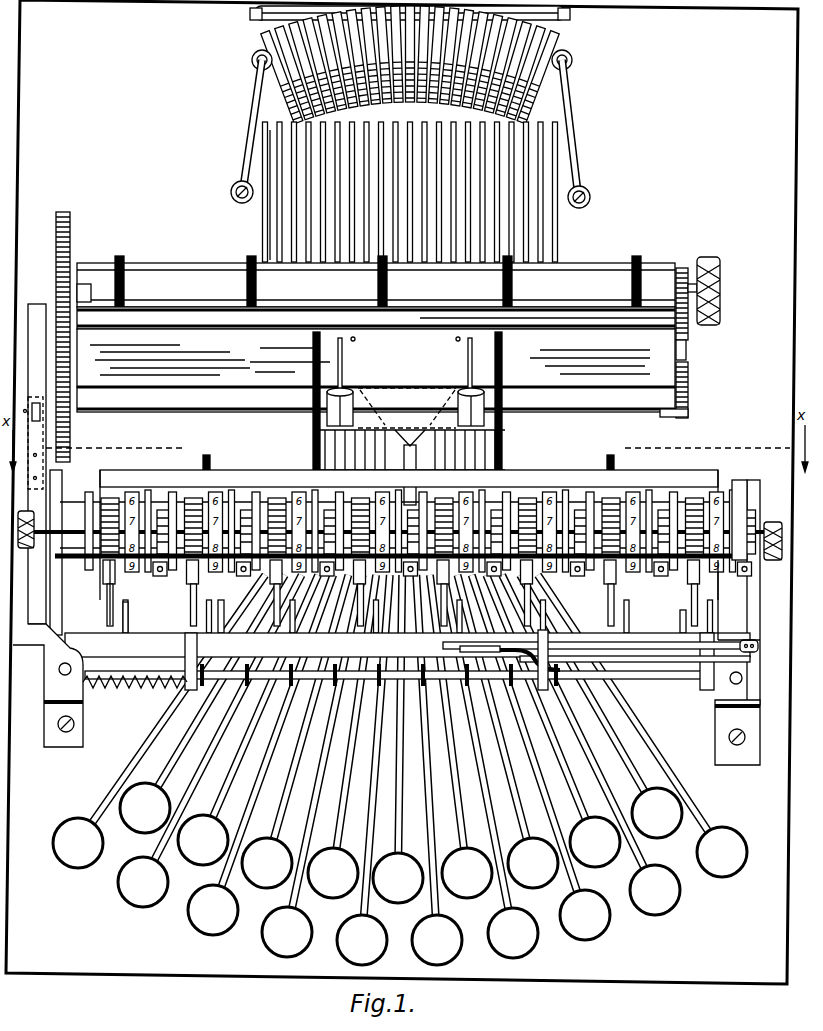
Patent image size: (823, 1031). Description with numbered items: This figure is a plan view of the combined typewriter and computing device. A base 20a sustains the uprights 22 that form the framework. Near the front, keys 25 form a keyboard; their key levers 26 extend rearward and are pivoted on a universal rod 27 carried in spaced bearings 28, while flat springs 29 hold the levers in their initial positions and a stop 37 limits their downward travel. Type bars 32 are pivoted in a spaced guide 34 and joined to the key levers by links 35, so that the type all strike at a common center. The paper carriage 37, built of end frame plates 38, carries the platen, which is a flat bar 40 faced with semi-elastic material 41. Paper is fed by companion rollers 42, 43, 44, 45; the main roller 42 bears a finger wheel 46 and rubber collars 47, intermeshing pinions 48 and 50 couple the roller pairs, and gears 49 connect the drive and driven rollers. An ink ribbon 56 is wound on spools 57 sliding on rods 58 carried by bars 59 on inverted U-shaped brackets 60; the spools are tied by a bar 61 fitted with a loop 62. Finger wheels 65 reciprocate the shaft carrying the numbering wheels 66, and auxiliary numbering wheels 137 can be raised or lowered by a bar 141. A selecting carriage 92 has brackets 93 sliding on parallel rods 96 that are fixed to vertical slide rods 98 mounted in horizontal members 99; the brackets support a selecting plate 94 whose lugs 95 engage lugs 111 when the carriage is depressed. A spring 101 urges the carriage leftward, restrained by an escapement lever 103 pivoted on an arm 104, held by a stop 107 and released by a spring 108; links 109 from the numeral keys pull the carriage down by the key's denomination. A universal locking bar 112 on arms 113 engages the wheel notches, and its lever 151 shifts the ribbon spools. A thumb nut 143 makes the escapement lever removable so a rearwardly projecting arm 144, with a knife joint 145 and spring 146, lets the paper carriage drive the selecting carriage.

The base 20a is at (400, 874).
The uprights 22 is at (160, 508).
The keys 25 is at (232, 905).
The key levers 26 is at (282, 236).
The universal rod 27 is at (255, 13).
The bearings 28 is at (262, 22).
The flat springs 29 is at (290, 172).
The type bars 32 is at (258, 74).
The guide 34 is at (566, 76).
The links 35 is at (520, 208).
The paper carriage 37 is at (686, 348).
The end frame plates 38 is at (72, 300).
The flat bar 40 is at (243, 340).
The semi-elastic material 41 is at (590, 344).
The main roller 42 is at (192, 272).
The companion roller 43 is at (574, 320).
The companion roller 44 is at (652, 392).
The driven roller 45 is at (660, 416).
The finger wheel 46 is at (722, 284).
The collars 47 is at (372, 295).
The intermeshing pinions 48 is at (682, 268).
The gears 49 is at (56, 262).
The intermeshing pinions 50 is at (690, 378).
The ink ribbon 56 is at (412, 392).
The spools 57 is at (354, 402).
The rods 58 is at (344, 350).
The bars 59 is at (407, 394).
The inverted U shaped brackets 60 is at (313, 350).
The bar 61 is at (398, 424).
The loop 62 is at (413, 429).
The finger wheels 65 is at (768, 522).
The numbering wheels 66 is at (280, 484).
The selecting carriage 92 is at (664, 680).
The brackets 93 is at (186, 646).
The selecting plate 94 is at (100, 640).
The lugs 95 is at (252, 580).
The parallel rods 96 is at (600, 684).
The vertical slide rods 98 is at (60, 672).
The horizontal members 99 is at (44, 656).
The spring 101 is at (114, 690).
The escapement lever 103 is at (548, 640).
The arm 104 is at (580, 660).
The stop 107 is at (640, 642).
The spring 108 is at (520, 655).
The links 109 is at (372, 664).
The lugs 111 is at (192, 598).
The universal locking bar 112 is at (630, 486).
The arms 113 is at (206, 456).
The auxiliary numbering wheels 137 is at (722, 500).
The bar 141 is at (76, 570).
The thumb nut 143 is at (548, 636).
The rearwardly projecting arm 144 is at (46, 492).
The knife joint 145 is at (40, 412).
The spring 146 is at (46, 466).
The lever 151 is at (400, 486).